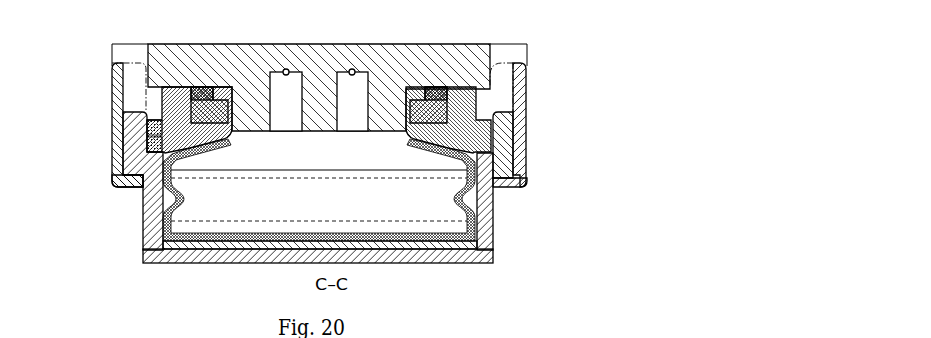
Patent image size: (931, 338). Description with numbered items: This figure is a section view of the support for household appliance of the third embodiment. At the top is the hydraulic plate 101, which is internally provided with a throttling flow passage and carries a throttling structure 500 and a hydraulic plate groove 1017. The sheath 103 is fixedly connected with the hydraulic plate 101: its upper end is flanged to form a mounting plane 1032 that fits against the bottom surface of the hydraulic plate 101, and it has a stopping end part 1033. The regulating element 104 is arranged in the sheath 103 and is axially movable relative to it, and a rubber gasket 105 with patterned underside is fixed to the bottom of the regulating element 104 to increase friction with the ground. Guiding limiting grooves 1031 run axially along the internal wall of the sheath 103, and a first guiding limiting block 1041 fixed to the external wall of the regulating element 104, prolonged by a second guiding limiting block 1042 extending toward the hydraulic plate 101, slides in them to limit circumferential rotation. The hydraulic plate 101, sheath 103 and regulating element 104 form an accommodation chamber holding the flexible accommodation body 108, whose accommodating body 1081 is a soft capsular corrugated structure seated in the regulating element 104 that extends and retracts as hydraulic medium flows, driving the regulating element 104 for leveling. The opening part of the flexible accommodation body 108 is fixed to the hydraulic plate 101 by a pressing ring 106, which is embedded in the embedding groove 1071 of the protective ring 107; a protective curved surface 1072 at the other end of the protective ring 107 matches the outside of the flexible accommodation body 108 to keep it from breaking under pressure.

The hydraulic plate 101 is at (441, 44).
The sheath 103 is at (113, 171).
The regulating element 104 is at (145, 250).
The rubber gasket 105 is at (267, 258).
The pressing ring 106 is at (163, 97).
The protective ring 107 is at (160, 132).
The flexible accommodation body 108 is at (385, 255).
The throttling structure 500 is at (285, 69).
The hydraulic plate groove 1017 is at (216, 86).
The guiding limiting groove 1031 is at (502, 90).
The mounting plane 1032 is at (513, 70).
The stopping end part 1033 is at (138, 187).
The first guiding limiting block 1041 is at (512, 176).
The second guiding limiting block 1042 is at (505, 132).
The embedding groove 1071 is at (163, 117).
The protective curved surface 1072 is at (155, 144).
The accommodating body 1081 is at (490, 216).